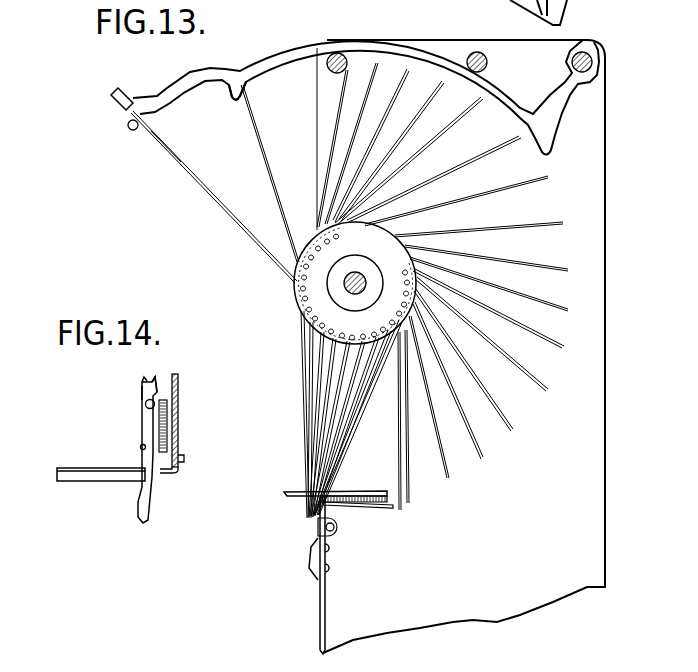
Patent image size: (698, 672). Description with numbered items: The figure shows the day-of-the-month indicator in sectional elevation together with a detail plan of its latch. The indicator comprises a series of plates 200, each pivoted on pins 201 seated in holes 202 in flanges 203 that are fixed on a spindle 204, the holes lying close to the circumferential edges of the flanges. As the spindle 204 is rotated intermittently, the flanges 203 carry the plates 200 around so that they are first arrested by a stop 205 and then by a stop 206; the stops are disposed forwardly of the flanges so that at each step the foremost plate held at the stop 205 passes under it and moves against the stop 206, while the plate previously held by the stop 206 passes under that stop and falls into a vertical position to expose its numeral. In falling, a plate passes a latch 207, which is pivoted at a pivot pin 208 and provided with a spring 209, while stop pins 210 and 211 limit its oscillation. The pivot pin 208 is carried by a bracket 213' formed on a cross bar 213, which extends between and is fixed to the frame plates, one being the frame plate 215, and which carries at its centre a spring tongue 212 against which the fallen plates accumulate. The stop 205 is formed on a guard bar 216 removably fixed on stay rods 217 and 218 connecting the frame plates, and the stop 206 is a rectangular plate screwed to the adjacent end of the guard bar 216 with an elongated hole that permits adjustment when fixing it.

In FIG. 13, the plates 200 is at (208, 195).
In FIG. 13, the pins 201 is at (301, 304).
In FIG. 13, the holes 202 is at (340, 334).
In FIG. 13, the flanges 203 is at (300, 279).
In FIG. 13, the spindle 204 is at (345, 277).
In FIG. 13, the stop 205 is at (232, 100).
In FIG. 13, the stop 206 is at (165, 148).
In FIG. 13, the latch 207 is at (287, 494).
In FIG. 14, the latch 207 is at (150, 514).
In FIG. 14, the pivot pin 208 is at (147, 406).
In FIG. 13, the spring 209 is at (365, 489).
In FIG. 14, the spring 209 is at (167, 422).
In FIG. 14, the stop pin 210 is at (140, 447).
In FIG. 14, the stop pin 211 is at (143, 384).
In FIG. 13, the spring tongue 212 is at (332, 506).
In FIG. 13, the cross bar 213 is at (289, 575).
In FIG. 14, the cross bar 213 is at (144, 453).
In FIG. 13, the bracket 213' is at (382, 526).
In FIG. 14, the bracket 213' is at (107, 393).
In FIG. 13, the frame plate 215 is at (596, 514).
In FIG. 13, the guard bar 216 is at (278, 58).
In FIG. 13, the stay rod 217 is at (341, 57).
In FIG. 13, the stay rod 218 is at (590, 54).